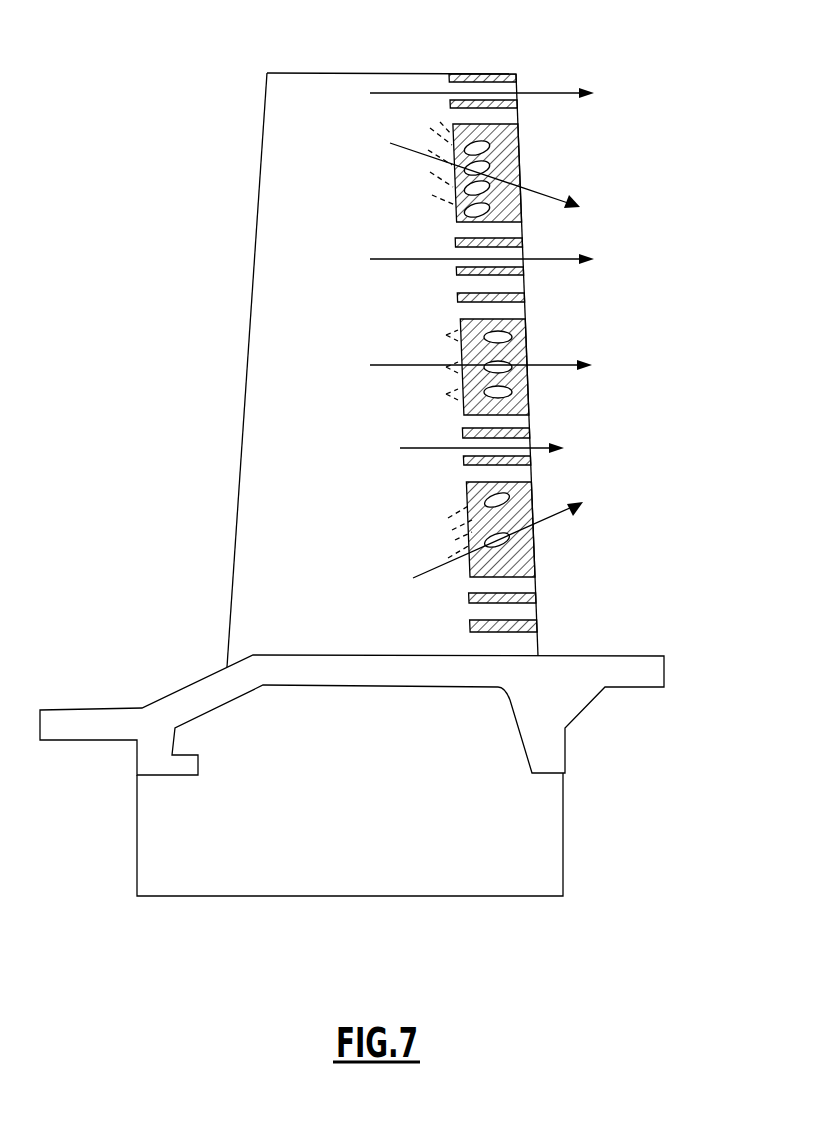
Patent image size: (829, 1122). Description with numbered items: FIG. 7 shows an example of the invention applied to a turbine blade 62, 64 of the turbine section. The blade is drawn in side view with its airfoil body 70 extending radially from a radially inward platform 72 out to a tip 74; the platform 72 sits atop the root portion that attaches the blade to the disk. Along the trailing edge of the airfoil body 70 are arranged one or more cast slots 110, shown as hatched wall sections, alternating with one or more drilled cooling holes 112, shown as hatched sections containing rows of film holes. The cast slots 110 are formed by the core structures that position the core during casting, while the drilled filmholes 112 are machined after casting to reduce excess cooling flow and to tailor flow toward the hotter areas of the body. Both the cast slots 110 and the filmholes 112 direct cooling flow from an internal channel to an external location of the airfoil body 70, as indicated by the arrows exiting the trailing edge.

The first blade 62 is at (389, 466).
The second blade 64 is at (156, 354).
The airfoil body 70 is at (278, 416).
The platform 72 is at (648, 670).
The tip 74 is at (267, 73).
The cast slot 110 is at (532, 470).
The drilled cooling hole 112 is at (520, 205).